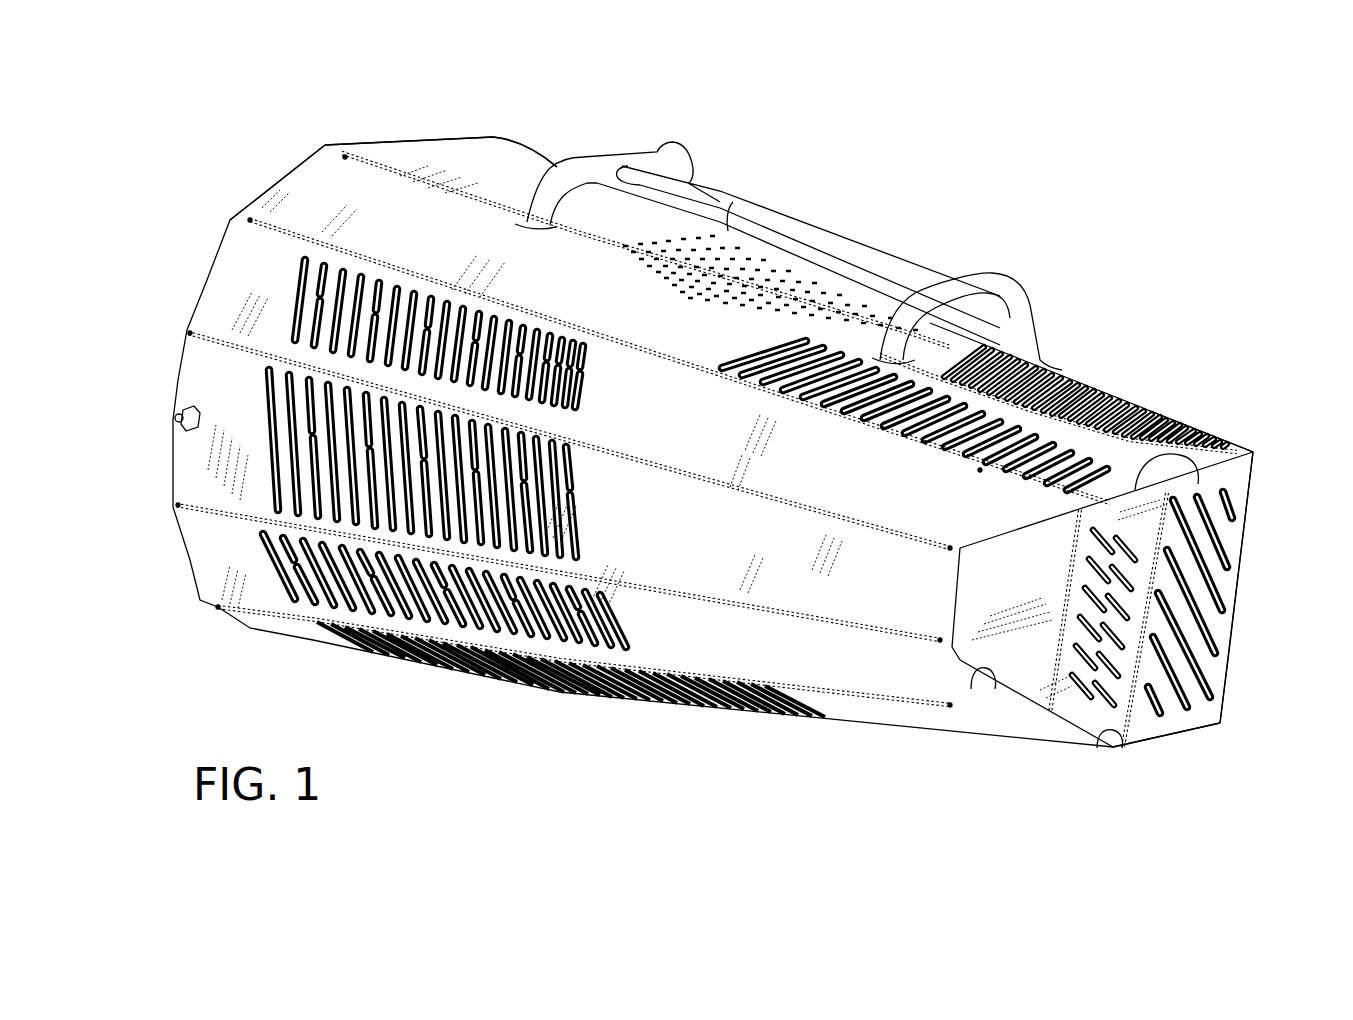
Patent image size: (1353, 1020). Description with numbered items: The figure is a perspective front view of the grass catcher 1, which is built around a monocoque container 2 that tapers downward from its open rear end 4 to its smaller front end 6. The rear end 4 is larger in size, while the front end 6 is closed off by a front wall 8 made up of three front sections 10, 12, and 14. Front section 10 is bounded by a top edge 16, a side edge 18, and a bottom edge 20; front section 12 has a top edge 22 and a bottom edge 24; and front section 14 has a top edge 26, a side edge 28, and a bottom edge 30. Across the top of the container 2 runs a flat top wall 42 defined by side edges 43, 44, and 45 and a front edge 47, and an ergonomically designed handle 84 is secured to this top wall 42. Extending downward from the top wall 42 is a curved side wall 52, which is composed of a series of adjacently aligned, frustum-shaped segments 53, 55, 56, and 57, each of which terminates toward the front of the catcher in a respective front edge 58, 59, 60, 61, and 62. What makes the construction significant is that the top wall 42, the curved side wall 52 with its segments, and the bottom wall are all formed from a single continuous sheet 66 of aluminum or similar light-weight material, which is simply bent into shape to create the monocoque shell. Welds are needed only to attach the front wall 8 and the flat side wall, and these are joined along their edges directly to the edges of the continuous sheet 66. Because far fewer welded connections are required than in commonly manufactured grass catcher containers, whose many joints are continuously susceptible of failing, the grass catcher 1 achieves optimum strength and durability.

The grass catcher 1 is at (614, 86).
The monocoque container 2 is at (1060, 372).
The rear end 4 is at (325, 143).
The front end 6 is at (1220, 723).
The front wall 8 is at (1218, 624).
The front section 10 is at (1224, 528).
The front section 12 is at (1071, 717).
The front section 14 is at (1030, 677).
The top edge 16 is at (1233, 478).
The side edge 18 is at (1240, 567).
The bottom edge 20 is at (1165, 745).
The top edge 22 is at (1190, 468).
The bottom edge 24 is at (1112, 747).
The top edge 26 is at (983, 550).
The side edge 28 is at (957, 613).
The bottom edge 30 is at (980, 671).
The flat top wall 42 is at (446, 150).
The side edge 43 is at (518, 146).
The side edge 44 is at (736, 212).
The side edge 45 is at (1113, 385).
The front edge 47 is at (1245, 455).
The curved side wall 52 is at (188, 331).
The frustum shaped segment 53 is at (300, 188).
The frustum shaped segment 55 is at (198, 376).
The frustum shaped segment 56 is at (204, 544).
The frustum shaped segment 57 is at (240, 255).
The front edge 58 is at (1080, 490).
The front edge 59 is at (998, 527).
The front edge 60 is at (952, 602).
The front edge 61 is at (963, 655).
The front edge 62 is at (1083, 742).
The continuous sheet 66 is at (764, 571).
The handle 84 is at (860, 257).